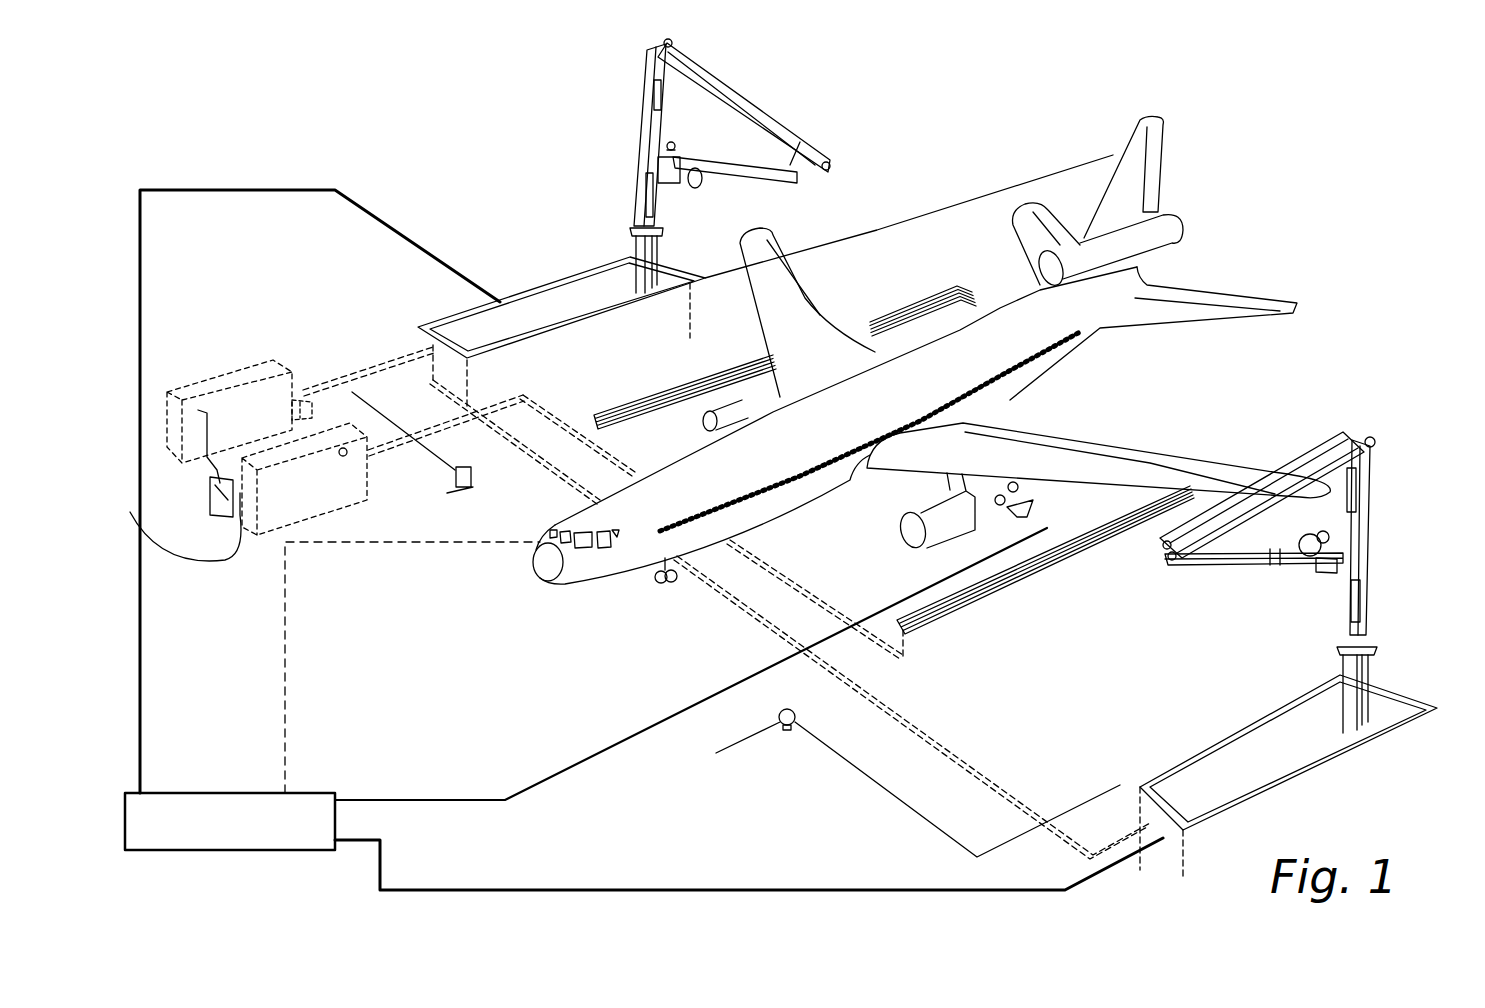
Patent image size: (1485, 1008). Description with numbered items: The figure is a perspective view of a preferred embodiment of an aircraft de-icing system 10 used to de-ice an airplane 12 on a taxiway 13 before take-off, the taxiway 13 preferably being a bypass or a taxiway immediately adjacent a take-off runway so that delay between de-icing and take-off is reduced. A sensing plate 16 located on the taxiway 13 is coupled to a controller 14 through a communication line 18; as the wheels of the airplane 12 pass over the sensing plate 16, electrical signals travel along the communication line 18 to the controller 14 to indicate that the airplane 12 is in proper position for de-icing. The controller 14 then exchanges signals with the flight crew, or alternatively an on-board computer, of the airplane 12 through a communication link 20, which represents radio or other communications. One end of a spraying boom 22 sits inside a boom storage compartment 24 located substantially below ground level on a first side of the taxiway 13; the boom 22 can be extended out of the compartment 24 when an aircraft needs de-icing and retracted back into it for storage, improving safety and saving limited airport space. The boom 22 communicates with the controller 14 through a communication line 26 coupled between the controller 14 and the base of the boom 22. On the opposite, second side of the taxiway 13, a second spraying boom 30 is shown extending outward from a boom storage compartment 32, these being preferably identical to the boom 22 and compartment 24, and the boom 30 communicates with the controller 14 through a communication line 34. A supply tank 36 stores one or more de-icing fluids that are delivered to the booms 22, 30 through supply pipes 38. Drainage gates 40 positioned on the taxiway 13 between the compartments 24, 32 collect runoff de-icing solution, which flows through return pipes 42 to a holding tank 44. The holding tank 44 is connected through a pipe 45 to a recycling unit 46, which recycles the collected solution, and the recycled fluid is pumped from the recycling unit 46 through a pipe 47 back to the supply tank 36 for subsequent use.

The aircraft de-icing system 10 is at (1047, 128).
The airplane 12 is at (1033, 327).
The taxiway 13 is at (913, 230).
The controller 14 is at (228, 850).
The sensing plate 16 is at (1047, 528).
The communication line 18 is at (682, 708).
The communication link 20 is at (476, 541).
The spraying boom 22 is at (746, 74).
The boom storage compartment 24 is at (585, 272).
The communication line 26 is at (212, 190).
The spraying boom 30 is at (1373, 557).
The boom storage compartment 32 is at (1214, 746).
The communication line 34 is at (778, 890).
The supply tank 36 is at (200, 386).
The supply pipes 38 is at (365, 365).
The drainage gates 40 is at (930, 300).
The return pipes 42 is at (383, 450).
The holding tank 44 is at (323, 485).
The pipe 45 is at (164, 527).
The recycling unit 46 is at (216, 500).
The pipe 47 is at (205, 430).